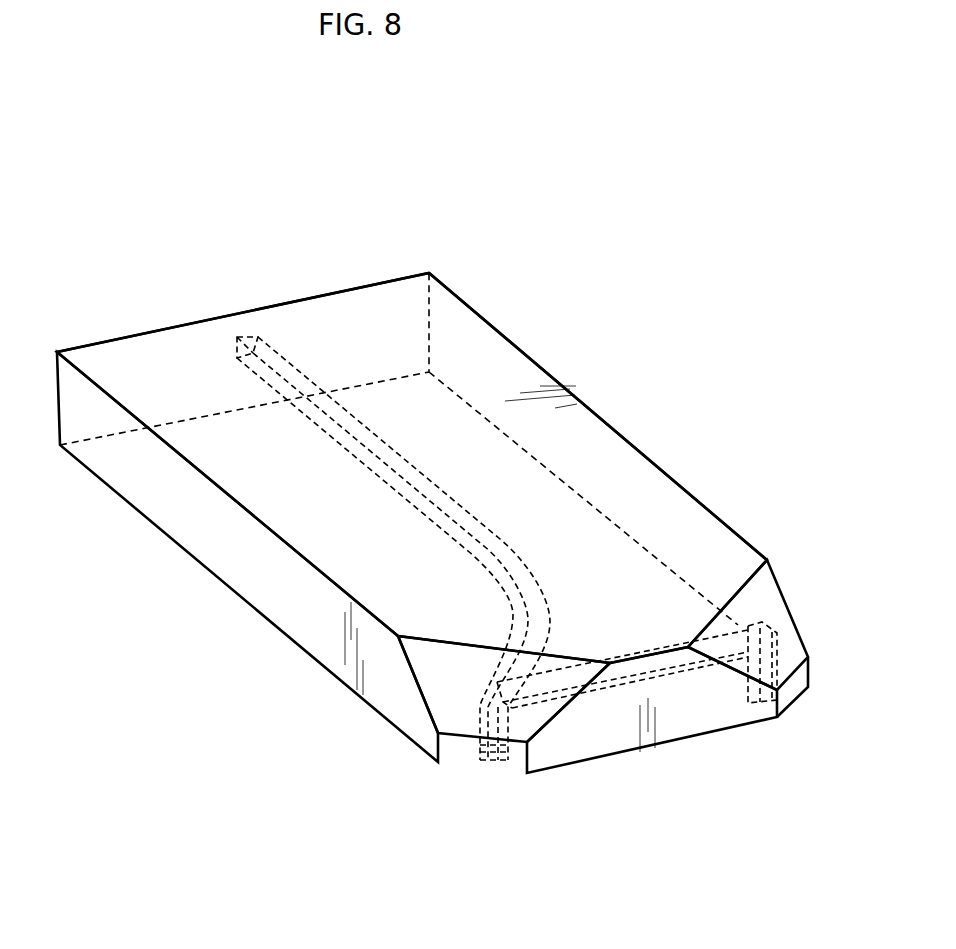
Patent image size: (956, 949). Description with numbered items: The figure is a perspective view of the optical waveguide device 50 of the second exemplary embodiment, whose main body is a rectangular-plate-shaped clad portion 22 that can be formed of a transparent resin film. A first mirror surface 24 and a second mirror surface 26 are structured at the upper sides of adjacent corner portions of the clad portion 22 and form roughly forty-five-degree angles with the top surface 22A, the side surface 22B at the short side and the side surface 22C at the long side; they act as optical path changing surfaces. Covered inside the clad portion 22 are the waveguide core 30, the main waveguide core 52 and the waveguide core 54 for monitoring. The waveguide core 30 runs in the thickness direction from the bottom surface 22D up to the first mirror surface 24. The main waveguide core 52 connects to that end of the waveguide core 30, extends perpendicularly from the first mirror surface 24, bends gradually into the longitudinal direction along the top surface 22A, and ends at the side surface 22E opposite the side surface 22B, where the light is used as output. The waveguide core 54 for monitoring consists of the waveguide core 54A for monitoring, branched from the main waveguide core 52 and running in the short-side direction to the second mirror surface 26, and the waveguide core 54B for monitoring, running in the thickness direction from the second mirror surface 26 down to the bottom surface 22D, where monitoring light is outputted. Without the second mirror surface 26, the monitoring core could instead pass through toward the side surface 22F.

The optical waveguide device 50 is at (609, 205).
The clad portion 22 is at (346, 291).
The top surface 22A is at (300, 520).
The side surface at the short side 22B is at (606, 720).
The side surface at the long side 22C is at (316, 632).
The bottom surface 22D is at (180, 483).
The side surface 22E is at (160, 372).
The side surface 22F is at (618, 478).
The first mirror surface 24 is at (442, 680).
The second mirror surface 26 is at (772, 603).
The waveguide core 30 is at (480, 718).
The main waveguide core 52 is at (402, 488).
The waveguide core for monitoring 54 is at (843, 822).
The waveguide core for monitoring 54A is at (672, 675).
The waveguide core for monitoring 54B is at (777, 690).